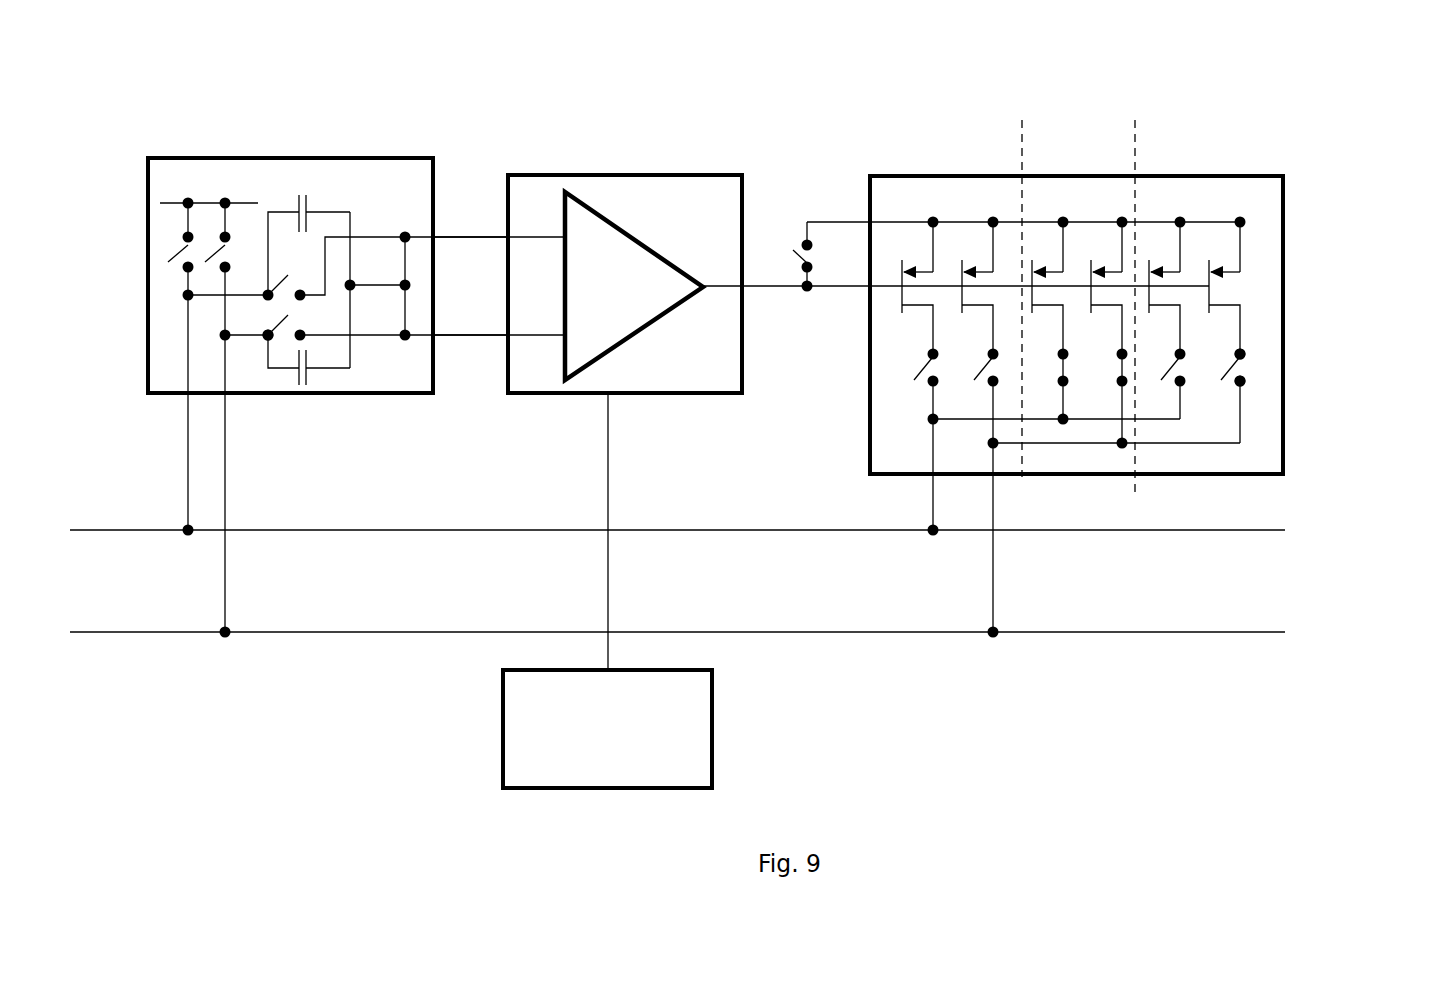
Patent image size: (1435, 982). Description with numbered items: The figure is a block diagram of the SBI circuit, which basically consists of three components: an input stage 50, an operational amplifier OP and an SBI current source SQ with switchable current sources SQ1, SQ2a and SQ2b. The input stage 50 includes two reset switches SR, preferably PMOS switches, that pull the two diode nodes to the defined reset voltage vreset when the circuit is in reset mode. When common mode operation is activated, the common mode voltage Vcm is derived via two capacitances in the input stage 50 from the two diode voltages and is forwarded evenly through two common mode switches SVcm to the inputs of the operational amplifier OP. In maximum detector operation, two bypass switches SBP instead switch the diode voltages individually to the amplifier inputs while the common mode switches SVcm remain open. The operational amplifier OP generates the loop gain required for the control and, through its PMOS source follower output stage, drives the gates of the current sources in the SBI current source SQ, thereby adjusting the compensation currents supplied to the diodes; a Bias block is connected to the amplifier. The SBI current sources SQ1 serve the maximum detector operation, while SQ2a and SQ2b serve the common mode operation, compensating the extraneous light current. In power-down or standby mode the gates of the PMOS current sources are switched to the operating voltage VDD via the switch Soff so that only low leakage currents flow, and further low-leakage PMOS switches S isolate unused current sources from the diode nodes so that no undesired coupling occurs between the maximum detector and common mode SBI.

The input stage 50 is at (322, 394).
The reset voltage vreset is at (209, 189).
The reset switches SR is at (157, 252).
The common mode voltage Vcm is at (363, 266).
The common mode switches SVcm is at (407, 252).
The bypass switches SBP is at (275, 358).
The operational amplifier OP is at (634, 228).
The bias circuit Bias is at (607, 590).
The operating voltage VDD is at (1016, 203).
The switch Soff is at (823, 257).
The SBI current source SQ is at (1125, 339).
The SBI current sources for maximum detector operation SQ1 is at (950, 373).
The SBI current source for common mode operation SQ2a is at (1080, 281).
The SBI current source for common mode operation SQ2b is at (1197, 278).
The PMOS switches S is at (1258, 362).